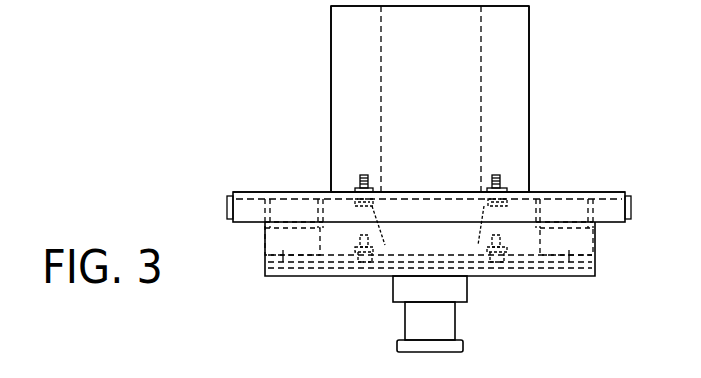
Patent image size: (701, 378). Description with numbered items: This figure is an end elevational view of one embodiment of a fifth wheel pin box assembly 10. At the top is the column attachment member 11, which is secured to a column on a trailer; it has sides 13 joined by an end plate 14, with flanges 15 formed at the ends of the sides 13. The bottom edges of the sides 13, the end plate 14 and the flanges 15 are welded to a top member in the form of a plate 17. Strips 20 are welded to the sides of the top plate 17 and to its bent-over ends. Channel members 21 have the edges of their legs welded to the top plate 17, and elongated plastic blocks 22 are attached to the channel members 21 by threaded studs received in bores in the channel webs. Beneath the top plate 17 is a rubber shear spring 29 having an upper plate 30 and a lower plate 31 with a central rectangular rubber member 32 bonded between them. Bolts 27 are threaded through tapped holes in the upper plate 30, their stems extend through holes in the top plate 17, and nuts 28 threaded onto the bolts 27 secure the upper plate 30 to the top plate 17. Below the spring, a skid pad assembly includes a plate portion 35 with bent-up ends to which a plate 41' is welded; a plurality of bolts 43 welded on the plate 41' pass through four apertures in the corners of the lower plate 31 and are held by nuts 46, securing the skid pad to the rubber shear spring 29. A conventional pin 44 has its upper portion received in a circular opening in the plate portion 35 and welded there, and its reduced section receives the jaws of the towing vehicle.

The fifth wheel pin box assembly 10 is at (240, 112).
The column attachment member 11 is at (529, 26).
The sides 13 is at (331, 96).
The end plate 14 is at (432, 79).
The flanges 15 is at (356, 46).
The top plate 17 is at (548, 192).
The strips 20 is at (227, 207).
The channel members 21 is at (265, 231).
The elongated plastic blocks 22 is at (272, 278).
The bolts 27 is at (363, 175).
The nuts 28 is at (355, 190).
The rubber shear spring 29 is at (468, 192).
The upper plate 30 is at (390, 192).
The lower plate 31 is at (356, 276).
The rubber member 32 is at (420, 192).
The plate portion 35 is at (552, 278).
The plate 41' is at (449, 317).
The bolts 43 is at (362, 262).
The pin 44 is at (393, 290).
The nuts 46 is at (500, 241).